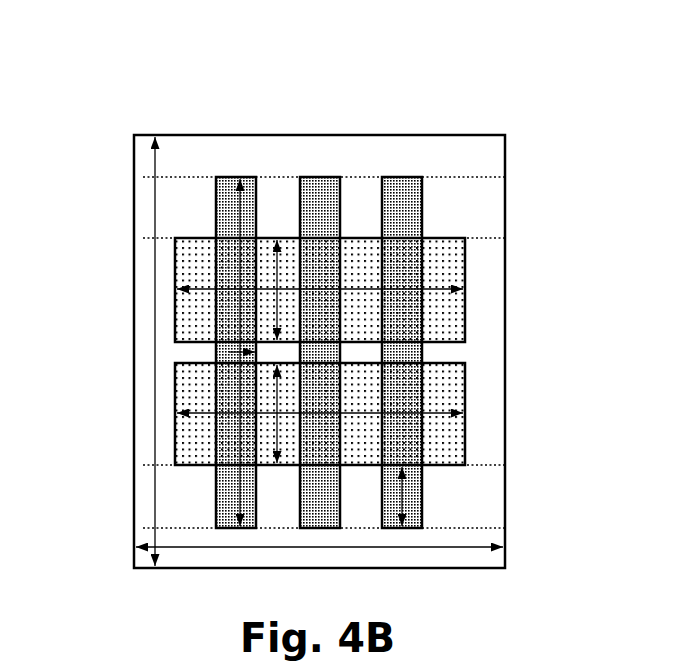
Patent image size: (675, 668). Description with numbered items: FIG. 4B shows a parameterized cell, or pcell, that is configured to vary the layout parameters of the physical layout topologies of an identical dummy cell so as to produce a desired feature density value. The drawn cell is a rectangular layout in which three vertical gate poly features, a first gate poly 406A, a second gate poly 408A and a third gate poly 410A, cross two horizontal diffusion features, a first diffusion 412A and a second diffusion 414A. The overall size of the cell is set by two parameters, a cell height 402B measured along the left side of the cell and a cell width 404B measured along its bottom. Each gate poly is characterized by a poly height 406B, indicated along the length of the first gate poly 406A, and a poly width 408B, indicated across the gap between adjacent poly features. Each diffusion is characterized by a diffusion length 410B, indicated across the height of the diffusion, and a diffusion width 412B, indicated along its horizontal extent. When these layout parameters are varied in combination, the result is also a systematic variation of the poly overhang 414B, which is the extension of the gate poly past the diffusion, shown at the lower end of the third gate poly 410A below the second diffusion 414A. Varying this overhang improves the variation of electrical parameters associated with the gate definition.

The cell height 402B is at (155, 163).
The cell width 404B is at (468, 545).
The first gate poly 406A is at (227, 198).
The second gate poly 408A is at (322, 198).
The third gate poly 410A is at (410, 198).
The poly height 406B is at (239, 279).
The poly width 408B is at (228, 351).
The diffusion length 410B is at (276, 396).
The diffusion width 412B is at (205, 417).
The first diffusion 412A is at (446, 267).
The second diffusion 414A is at (447, 382).
The poly overhang 414B is at (404, 494).